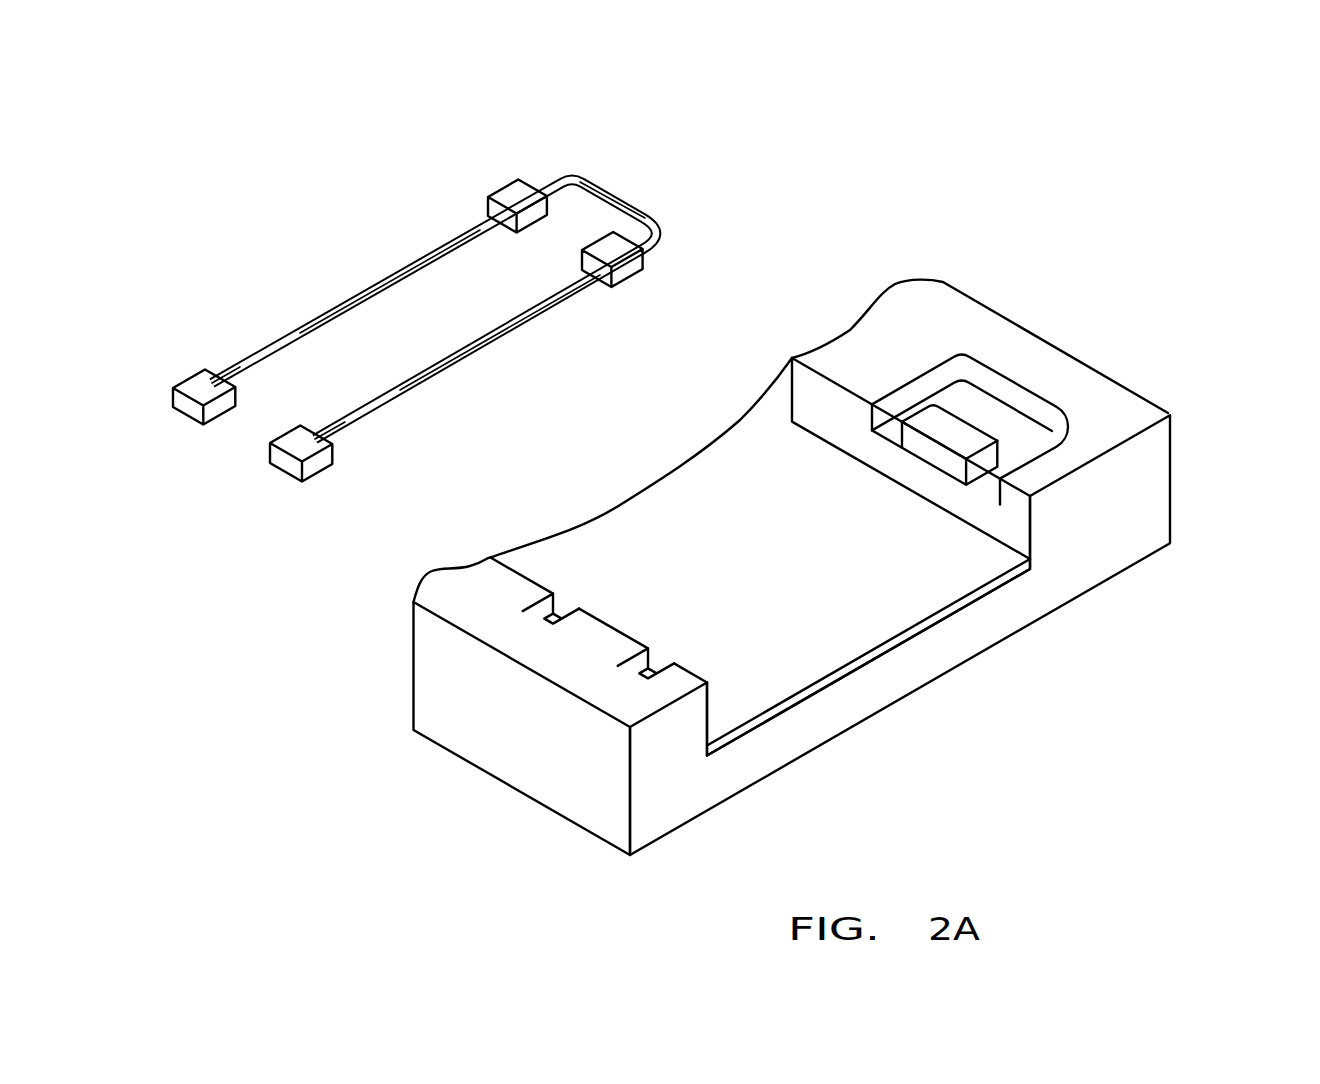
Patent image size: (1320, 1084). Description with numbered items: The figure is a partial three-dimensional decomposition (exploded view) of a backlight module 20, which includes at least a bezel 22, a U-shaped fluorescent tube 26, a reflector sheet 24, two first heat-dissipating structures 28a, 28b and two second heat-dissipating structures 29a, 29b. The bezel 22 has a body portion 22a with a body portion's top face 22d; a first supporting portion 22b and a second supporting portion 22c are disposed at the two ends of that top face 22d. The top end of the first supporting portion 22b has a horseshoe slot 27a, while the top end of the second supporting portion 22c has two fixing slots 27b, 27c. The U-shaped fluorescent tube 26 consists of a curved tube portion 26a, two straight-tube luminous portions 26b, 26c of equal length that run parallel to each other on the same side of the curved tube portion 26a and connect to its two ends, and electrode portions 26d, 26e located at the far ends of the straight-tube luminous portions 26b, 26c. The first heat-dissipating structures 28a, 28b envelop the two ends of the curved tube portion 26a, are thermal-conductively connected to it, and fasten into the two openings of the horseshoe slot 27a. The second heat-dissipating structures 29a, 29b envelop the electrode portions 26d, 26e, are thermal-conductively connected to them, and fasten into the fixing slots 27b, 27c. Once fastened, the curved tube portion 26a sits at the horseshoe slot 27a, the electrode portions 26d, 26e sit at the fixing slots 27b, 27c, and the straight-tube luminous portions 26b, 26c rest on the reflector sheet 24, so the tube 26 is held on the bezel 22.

The backlight module 20 is at (932, 135).
The bezel 22 is at (765, 556).
The body portion 22a is at (790, 746).
The first supporting portion 22b is at (1142, 493).
The second supporting portion 22c is at (668, 782).
The body portion's top face 22d is at (988, 604).
The reflector sheet 24 is at (840, 634).
The U-shaped fluorescent tube 26 is at (438, 305).
The curved tube portion 26a is at (622, 203).
The straight-tube luminous portion 26b is at (353, 300).
The straight-tube luminous portion 26c is at (437, 375).
The electrode portion 26d is at (197, 368).
The electrode portion 26e is at (320, 468).
The horseshoe slot 27a is at (1007, 443).
The fixing slot 27b is at (522, 605).
The fixing slot 27c is at (617, 668).
The first heat-dissipating structure 28a is at (508, 192).
The first heat-dissipating structure 28b is at (630, 275).
The second heat-dissipating structure 29a is at (173, 405).
The second heat-dissipating structure 29b is at (272, 460).